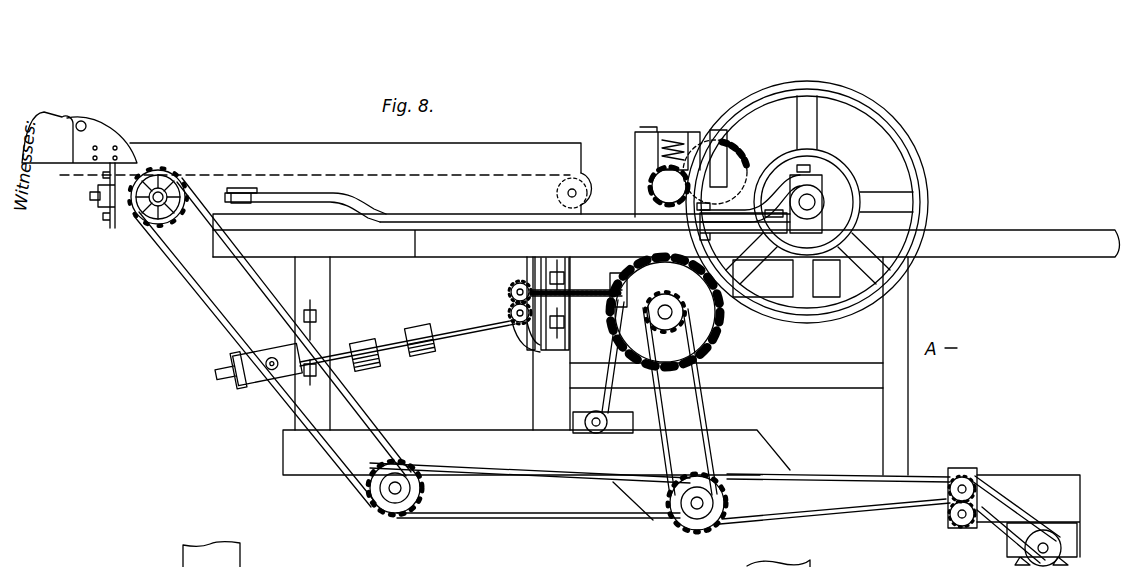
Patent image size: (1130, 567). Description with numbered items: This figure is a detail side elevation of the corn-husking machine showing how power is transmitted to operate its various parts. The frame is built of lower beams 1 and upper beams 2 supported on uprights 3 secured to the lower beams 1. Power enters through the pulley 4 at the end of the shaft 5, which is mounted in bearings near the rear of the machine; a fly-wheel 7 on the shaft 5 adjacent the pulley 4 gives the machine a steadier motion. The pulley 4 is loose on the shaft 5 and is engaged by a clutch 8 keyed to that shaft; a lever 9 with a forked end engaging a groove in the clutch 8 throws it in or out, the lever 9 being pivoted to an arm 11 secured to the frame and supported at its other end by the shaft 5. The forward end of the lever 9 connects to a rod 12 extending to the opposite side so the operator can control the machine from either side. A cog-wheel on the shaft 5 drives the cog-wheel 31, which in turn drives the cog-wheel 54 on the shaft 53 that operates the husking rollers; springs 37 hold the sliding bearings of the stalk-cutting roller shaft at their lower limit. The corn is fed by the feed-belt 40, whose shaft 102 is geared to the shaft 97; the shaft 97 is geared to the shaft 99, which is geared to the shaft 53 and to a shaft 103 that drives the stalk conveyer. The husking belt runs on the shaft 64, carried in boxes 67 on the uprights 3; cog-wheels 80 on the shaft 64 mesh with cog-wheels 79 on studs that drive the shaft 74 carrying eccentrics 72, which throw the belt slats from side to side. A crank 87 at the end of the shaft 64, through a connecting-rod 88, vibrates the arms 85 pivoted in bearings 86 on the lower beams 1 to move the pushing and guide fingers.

The lower beams 1 is at (536, 475).
The upper beams 2 is at (666, 245).
The uprights 3 is at (601, 366).
The pulley 4 is at (850, 172).
The shaft 5 is at (830, 195).
The fly-wheel 7 is at (888, 114).
The clutch 8 is at (815, 194).
The lever 9 is at (590, 213).
The arm 11 is at (748, 214).
The rod 12 is at (243, 188).
The cog-wheel 31 is at (740, 153).
The springs 37 is at (680, 132).
The feed-belt 40 is at (341, 202).
The shaft 53 is at (690, 322).
The cog-wheel 54 is at (702, 316).
The shaft 64 is at (508, 290).
The boxes 67 is at (545, 268).
The eccentrics 72 is at (370, 366).
The shaft 74 is at (472, 330).
The cog-wheels 79 is at (508, 313).
The cog-wheels 80 is at (508, 277).
The vibrating arms 85 is at (603, 403).
The bearings 86 is at (578, 434).
The crank 87 is at (528, 335).
The connecting-rod 88 is at (595, 292).
The shaft 97 is at (388, 492).
The shaft 99 is at (693, 506).
The shaft 102 is at (152, 207).
The shaft 103 is at (1050, 546).